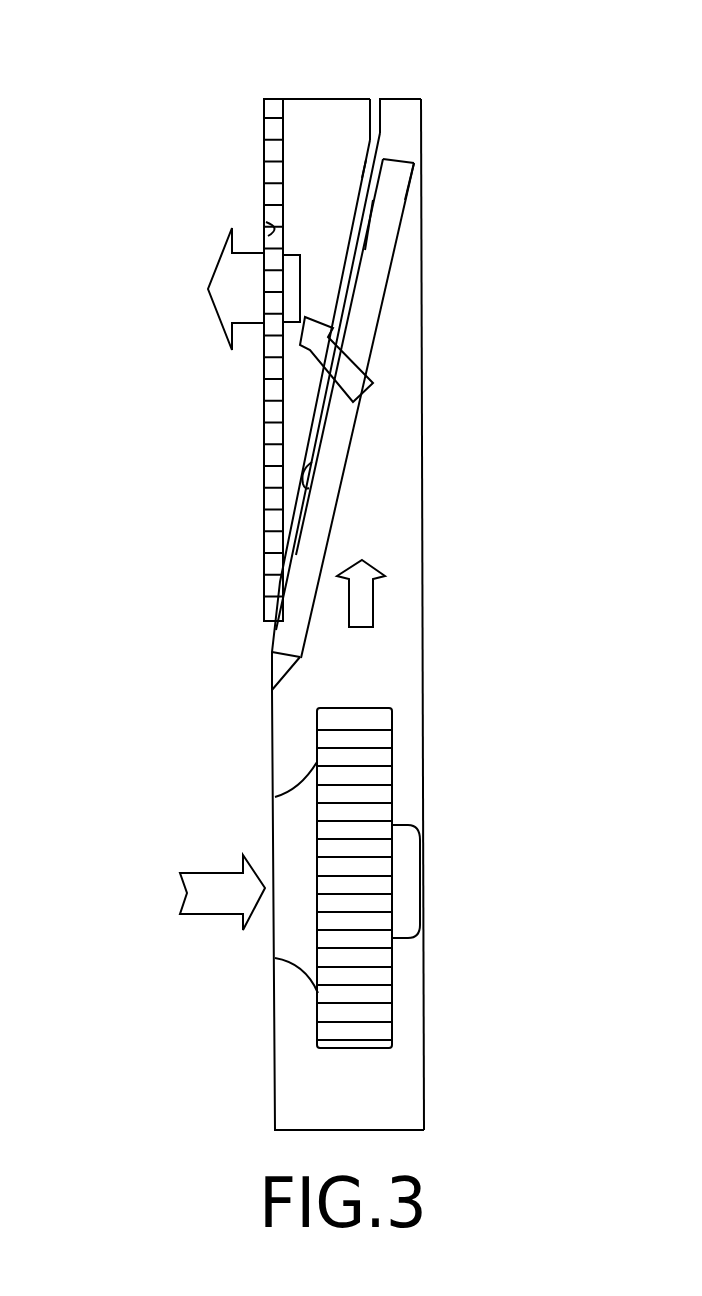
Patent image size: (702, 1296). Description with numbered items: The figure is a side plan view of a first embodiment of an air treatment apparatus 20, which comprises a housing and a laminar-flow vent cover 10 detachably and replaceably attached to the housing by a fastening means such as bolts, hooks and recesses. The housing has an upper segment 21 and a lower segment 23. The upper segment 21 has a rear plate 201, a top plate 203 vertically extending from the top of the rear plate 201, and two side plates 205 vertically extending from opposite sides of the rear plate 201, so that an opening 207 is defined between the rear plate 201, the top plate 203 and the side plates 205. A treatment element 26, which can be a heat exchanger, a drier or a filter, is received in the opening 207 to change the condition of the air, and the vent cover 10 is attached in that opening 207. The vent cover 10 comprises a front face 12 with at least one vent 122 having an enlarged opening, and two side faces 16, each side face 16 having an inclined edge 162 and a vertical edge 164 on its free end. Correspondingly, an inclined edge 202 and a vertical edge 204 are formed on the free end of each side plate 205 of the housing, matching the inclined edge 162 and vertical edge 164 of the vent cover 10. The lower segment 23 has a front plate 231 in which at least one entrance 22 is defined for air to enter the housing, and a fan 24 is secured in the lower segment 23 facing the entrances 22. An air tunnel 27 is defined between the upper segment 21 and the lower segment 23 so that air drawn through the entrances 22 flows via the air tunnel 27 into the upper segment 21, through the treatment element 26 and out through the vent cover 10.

The vent cover 10 is at (160, 635).
The front face 12 is at (265, 129).
The vent 122 is at (265, 235).
The side face 16 is at (353, 116).
The inclined edge 162 is at (360, 212).
The vertical edge 164 is at (371, 121).
The air treatment apparatus 20 is at (462, 745).
The rear plate 201 is at (423, 301).
The inclined edge 202 is at (309, 488).
The top plate 203 is at (397, 99).
The vertical edge 204 is at (380, 133).
The side plate 205 is at (408, 134).
The opening 207 is at (366, 178).
The upper segment 21 is at (428, 418).
The entrance 22 is at (270, 930).
The lower segment 23 is at (426, 960).
The front plate 231 is at (275, 1075).
The fan 24 is at (375, 870).
The treatment element 26 is at (360, 348).
The air tunnel 27 is at (403, 590).